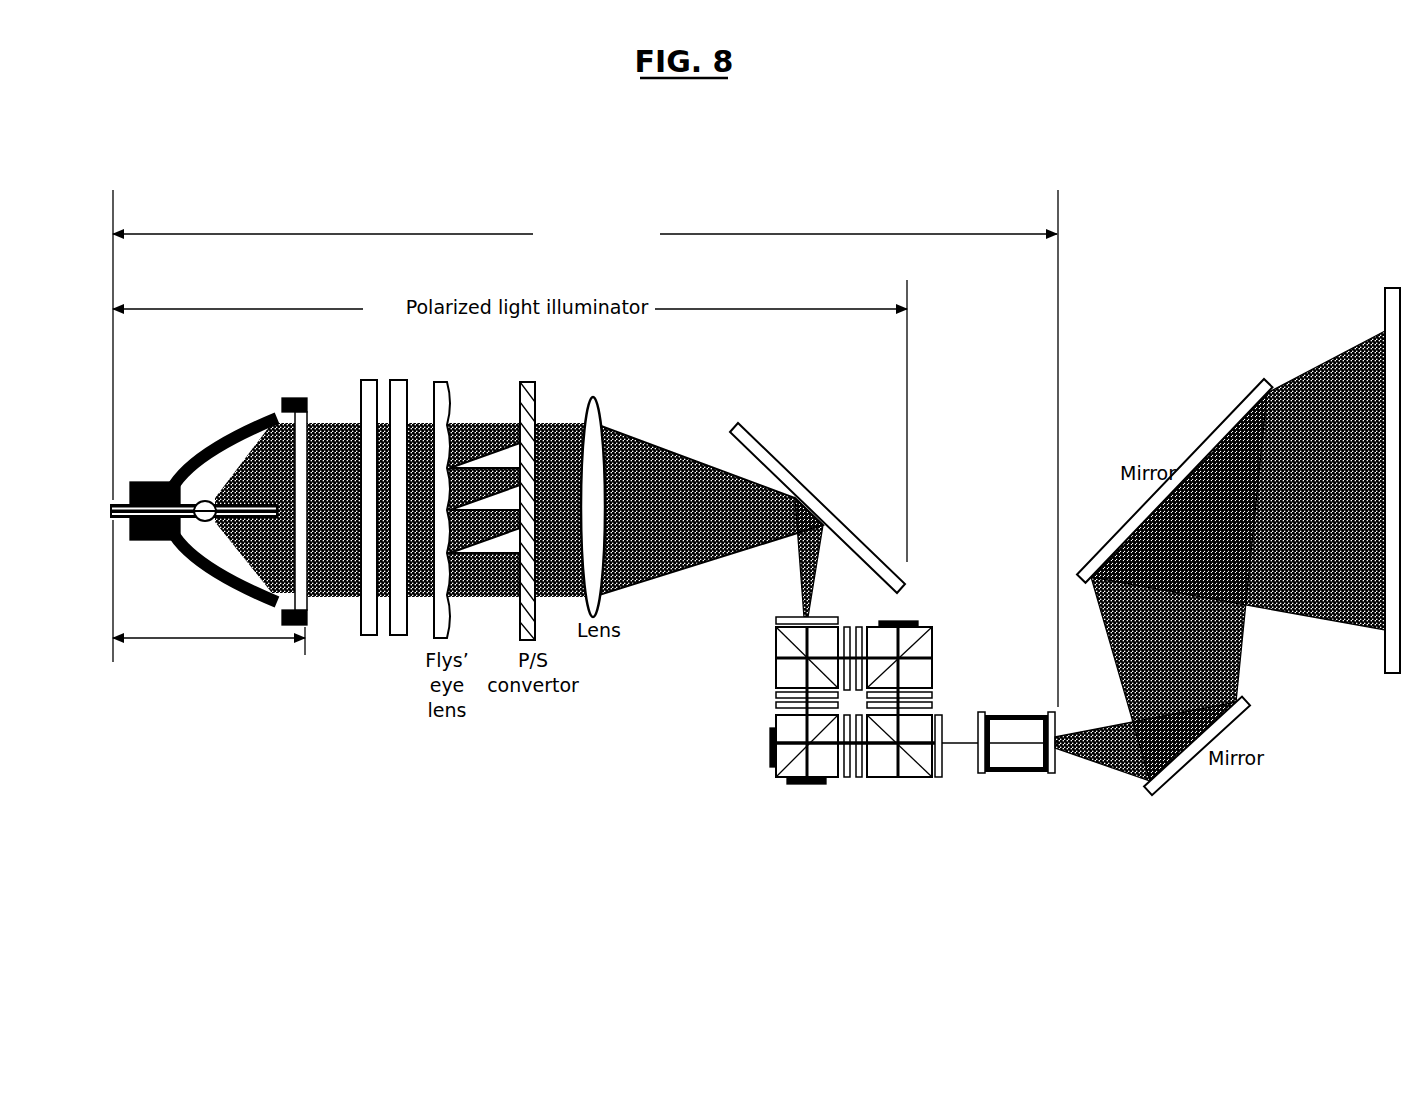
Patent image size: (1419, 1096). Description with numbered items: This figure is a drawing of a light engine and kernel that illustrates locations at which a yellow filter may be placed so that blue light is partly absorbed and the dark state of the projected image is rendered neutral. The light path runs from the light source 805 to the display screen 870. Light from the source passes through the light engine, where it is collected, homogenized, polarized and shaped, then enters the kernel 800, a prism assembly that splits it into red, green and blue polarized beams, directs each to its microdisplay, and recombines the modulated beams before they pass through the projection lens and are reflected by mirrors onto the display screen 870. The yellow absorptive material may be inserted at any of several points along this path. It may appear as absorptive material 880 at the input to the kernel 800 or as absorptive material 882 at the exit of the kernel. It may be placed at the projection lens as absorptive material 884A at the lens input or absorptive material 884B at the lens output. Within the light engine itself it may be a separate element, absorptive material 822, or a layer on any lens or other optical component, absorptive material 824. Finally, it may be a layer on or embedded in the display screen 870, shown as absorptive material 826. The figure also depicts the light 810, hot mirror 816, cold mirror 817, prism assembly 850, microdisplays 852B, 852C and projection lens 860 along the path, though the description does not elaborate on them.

The kernel 800 is at (585, 448).
The light source 805 is at (208, 571).
The light beam 810 is at (352, 451).
The hot mirror 816 is at (375, 549).
The cold mirror 817 is at (817, 506).
The absorptive material 822 is at (393, 368).
The absorptive material 824 is at (733, 452).
The absorptive material 826 is at (1377, 646).
The prism assembly 850 is at (762, 652).
The microdisplay 852B is at (717, 770).
The blue microdisplay 852C is at (797, 785).
The projection lens 860 is at (1012, 730).
The display screen 870 is at (1388, 679).
The absorptive material 880 is at (770, 618).
The absorptive material 882 is at (940, 781).
The absorptive material 884A is at (980, 781).
The absorptive material 884B is at (1052, 781).